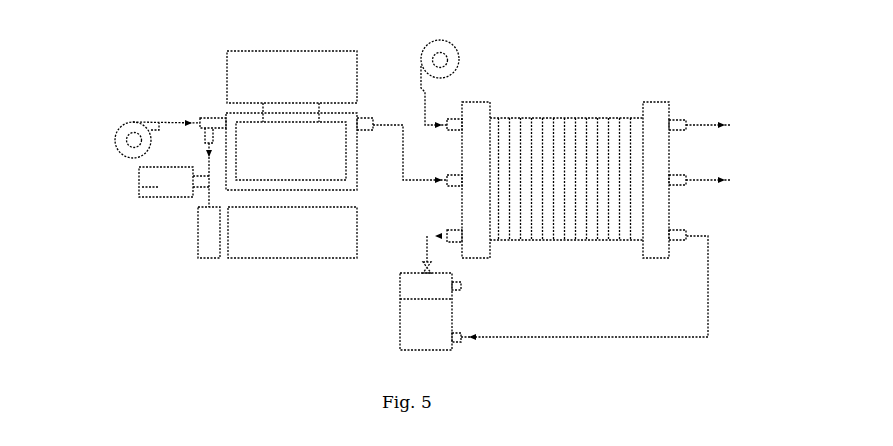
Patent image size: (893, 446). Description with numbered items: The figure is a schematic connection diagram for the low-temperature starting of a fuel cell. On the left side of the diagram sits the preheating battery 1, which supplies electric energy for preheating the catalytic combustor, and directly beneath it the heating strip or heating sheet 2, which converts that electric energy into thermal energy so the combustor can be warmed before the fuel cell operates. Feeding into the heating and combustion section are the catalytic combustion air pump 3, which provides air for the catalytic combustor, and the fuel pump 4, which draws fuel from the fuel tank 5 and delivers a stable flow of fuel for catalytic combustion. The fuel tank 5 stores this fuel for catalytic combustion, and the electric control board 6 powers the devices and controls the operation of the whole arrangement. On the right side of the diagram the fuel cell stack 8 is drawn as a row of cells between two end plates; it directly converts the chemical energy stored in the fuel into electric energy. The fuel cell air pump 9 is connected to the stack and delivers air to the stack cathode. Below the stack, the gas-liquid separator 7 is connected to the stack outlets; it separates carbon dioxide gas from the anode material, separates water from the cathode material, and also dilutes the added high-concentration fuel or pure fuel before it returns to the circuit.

The preheating battery 1 is at (251, 51).
The heating strip or heating sheet 2 is at (222, 118).
The catalytic combustion air pump 3 is at (112, 128).
The fuel pump 4 is at (142, 190).
The fuel tank 5 is at (205, 245).
The electric control board 6 is at (282, 258).
The gas-liquid separator 7 is at (400, 339).
The fuel cell stack 8 is at (650, 102).
The fuel cell air pump 9 is at (446, 47).